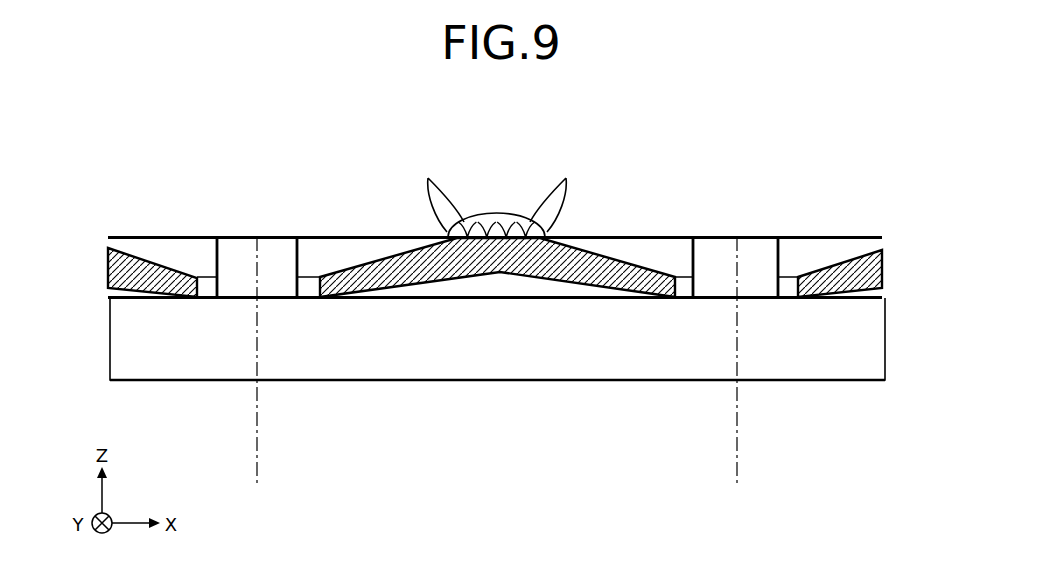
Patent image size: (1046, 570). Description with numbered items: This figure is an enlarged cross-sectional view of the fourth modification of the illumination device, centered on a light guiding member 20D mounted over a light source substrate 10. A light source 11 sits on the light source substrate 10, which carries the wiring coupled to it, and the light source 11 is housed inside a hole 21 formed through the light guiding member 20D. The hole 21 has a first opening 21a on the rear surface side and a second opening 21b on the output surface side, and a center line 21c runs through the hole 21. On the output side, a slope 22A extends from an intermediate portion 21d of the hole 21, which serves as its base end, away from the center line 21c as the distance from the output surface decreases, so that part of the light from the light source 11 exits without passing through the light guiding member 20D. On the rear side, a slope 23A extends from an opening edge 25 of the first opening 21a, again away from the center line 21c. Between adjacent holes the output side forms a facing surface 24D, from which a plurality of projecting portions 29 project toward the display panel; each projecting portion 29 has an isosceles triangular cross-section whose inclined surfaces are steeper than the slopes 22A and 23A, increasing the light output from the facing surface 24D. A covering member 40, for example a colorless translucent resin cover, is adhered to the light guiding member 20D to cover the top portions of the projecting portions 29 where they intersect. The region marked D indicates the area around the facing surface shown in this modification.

The light source substrate 10 is at (865, 365).
The light source 11 is at (277, 254).
The light guiding member 20D is at (88, 246).
The hole 21 is at (205, 288).
The first opening 21a is at (298, 300).
The second opening 21b is at (124, 243).
The center line 21c is at (497, 373).
The intermediate portion 21d is at (196, 277).
The slope 22A is at (167, 256).
The slope 23A is at (121, 290).
The facing surface 24D is at (499, 228).
The opening edge 25 is at (197, 299).
The projecting portion 29 is at (429, 179).
The covering member 40 is at (492, 213).
The displacement region D is at (415, 258).